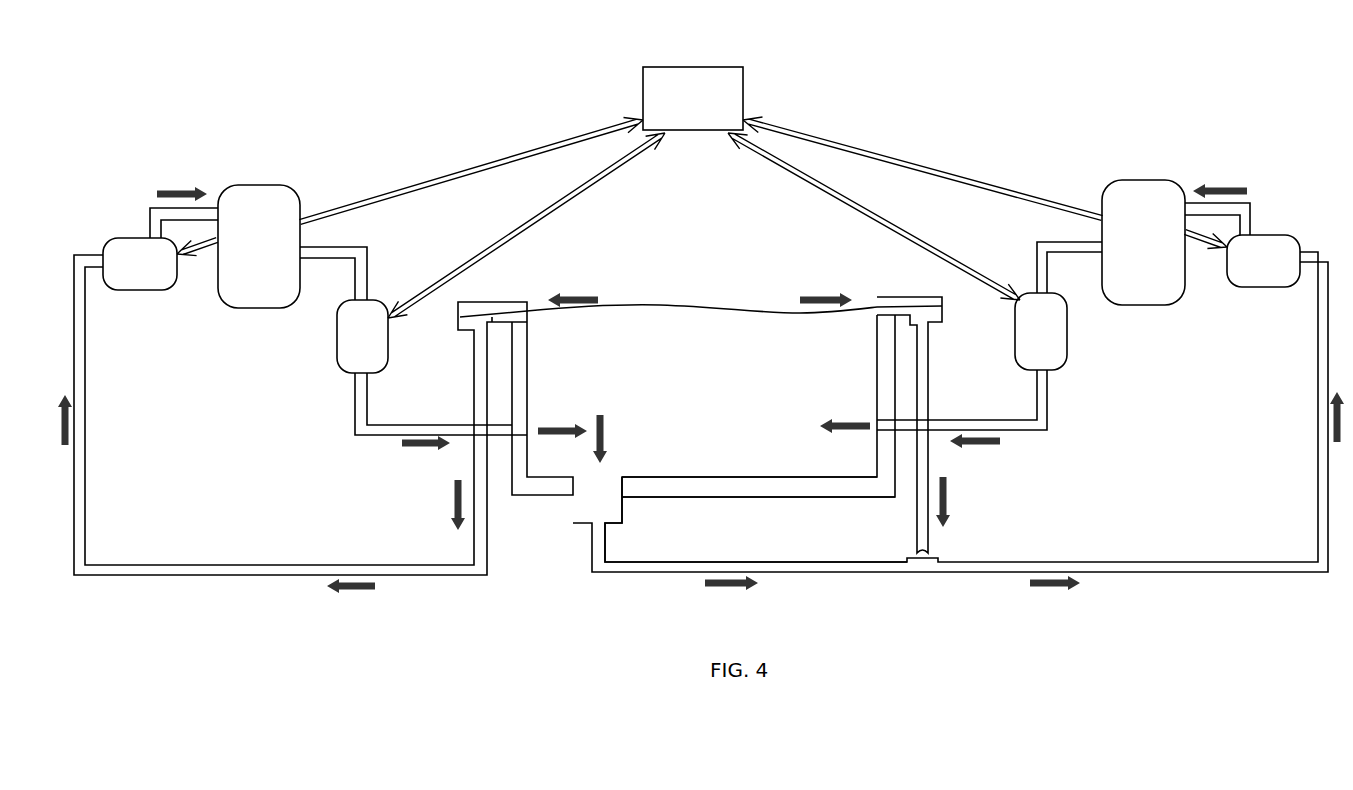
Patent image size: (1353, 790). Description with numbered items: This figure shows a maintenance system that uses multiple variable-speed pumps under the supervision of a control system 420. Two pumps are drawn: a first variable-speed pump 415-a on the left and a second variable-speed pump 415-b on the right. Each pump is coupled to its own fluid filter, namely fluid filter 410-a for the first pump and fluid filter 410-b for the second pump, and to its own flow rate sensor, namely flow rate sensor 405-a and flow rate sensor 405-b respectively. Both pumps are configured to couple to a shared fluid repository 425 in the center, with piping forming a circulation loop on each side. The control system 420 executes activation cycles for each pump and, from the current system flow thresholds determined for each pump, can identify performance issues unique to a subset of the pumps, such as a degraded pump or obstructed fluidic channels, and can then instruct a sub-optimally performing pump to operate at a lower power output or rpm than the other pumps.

The control system 420 is at (678, 130).
The fluid filter 410-a is at (270, 308).
The variable-speed pump 415-a is at (123, 290).
The flow rate sensor 405-a is at (345, 373).
The fluid filter 410-b is at (1143, 305).
The variable-speed pump 415-b is at (1052, 370).
The flow rate sensor 405-b is at (1270, 287).
The fluid repository 425 is at (755, 477).